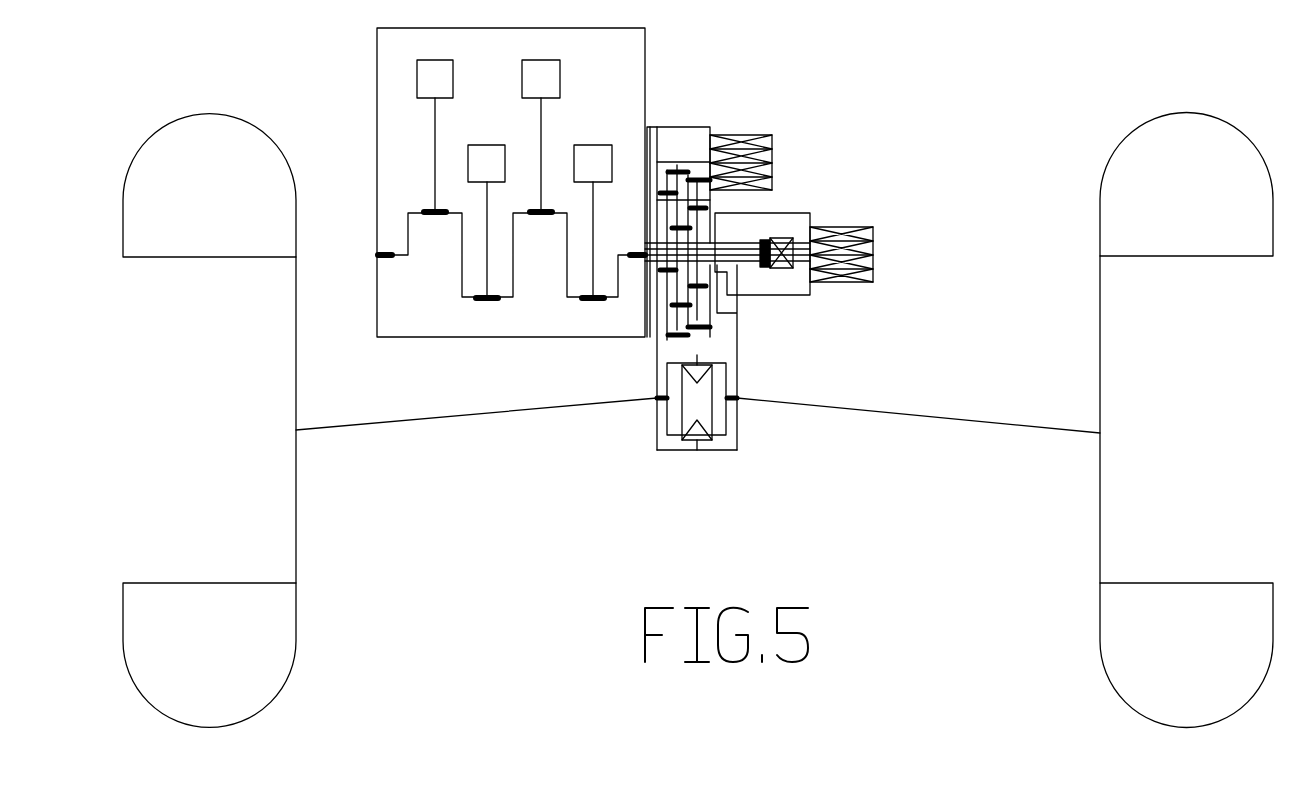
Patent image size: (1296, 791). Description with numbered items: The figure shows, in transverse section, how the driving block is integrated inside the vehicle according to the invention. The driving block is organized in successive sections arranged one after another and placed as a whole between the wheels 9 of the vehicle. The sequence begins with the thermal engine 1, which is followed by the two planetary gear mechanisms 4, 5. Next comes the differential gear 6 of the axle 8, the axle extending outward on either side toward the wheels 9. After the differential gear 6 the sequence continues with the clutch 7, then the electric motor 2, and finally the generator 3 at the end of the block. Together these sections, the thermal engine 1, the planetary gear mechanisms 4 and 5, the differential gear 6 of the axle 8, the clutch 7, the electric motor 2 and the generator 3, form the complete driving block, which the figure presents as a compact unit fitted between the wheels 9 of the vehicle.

The thermal engine 1 is at (645, 43).
The electric motor 2 is at (773, 153).
The generator 3 is at (850, 282).
The planetary gear mechanism 4 is at (677, 243).
The planetary gear mechanism 5 is at (779, 232).
The differential gear 6 is at (728, 385).
The clutch 7 is at (777, 235).
The axle 8 is at (848, 409).
The wheels 9 is at (1168, 257).